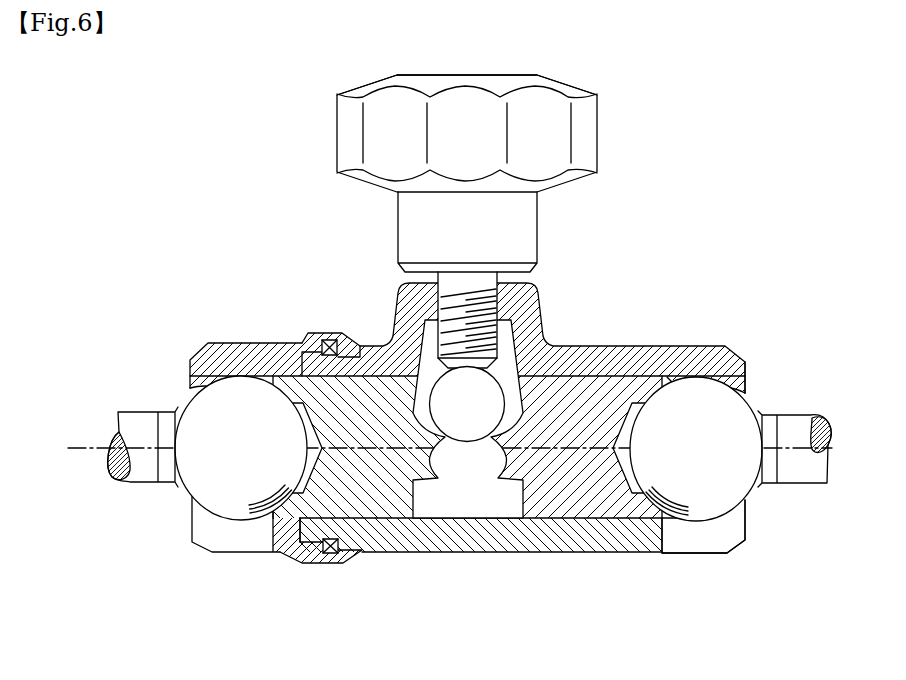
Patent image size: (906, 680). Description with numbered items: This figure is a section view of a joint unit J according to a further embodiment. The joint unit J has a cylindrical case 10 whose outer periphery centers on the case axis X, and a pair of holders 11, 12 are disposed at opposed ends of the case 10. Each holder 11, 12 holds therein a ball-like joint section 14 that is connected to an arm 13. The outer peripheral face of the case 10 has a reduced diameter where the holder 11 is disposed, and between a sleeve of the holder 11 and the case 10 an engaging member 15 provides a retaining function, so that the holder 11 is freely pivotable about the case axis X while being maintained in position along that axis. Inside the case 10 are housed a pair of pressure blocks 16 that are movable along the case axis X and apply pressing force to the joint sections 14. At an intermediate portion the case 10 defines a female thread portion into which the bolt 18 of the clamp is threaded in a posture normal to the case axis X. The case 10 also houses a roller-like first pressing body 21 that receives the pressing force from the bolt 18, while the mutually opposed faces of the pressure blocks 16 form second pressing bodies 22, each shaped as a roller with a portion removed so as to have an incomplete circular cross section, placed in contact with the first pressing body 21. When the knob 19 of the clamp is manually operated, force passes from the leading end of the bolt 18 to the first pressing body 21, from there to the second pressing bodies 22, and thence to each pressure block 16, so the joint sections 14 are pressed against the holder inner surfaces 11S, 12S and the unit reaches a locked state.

The case 10 is at (567, 345).
The holder 11 is at (183, 344).
The holder inner surface 11S is at (240, 386).
The holder 12 is at (732, 352).
The holder inner surface 12S is at (676, 380).
The arm 13 is at (145, 428).
The joint section 14 is at (200, 485).
The engaging member 15 is at (330, 340).
The pressure block 16 is at (603, 397).
The bolt 18 is at (447, 311).
The knob 19 is at (575, 144).
The first pressing body 21 is at (469, 430).
The second pressing body 22 is at (432, 483).
The case axis X is at (438, 447).
The joint unit J is at (602, 578).